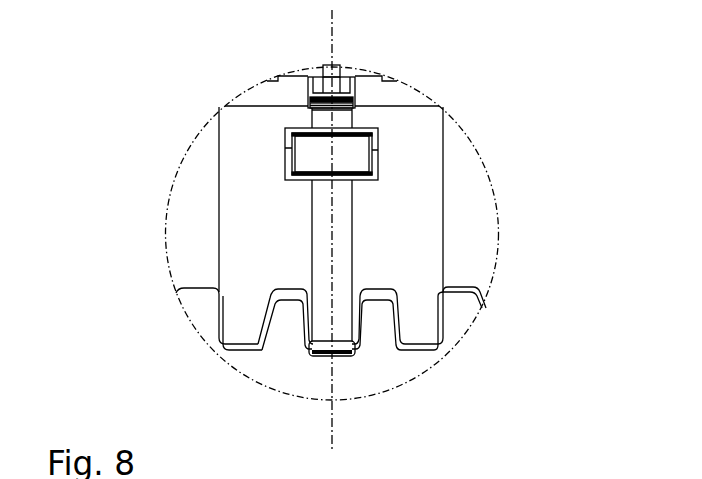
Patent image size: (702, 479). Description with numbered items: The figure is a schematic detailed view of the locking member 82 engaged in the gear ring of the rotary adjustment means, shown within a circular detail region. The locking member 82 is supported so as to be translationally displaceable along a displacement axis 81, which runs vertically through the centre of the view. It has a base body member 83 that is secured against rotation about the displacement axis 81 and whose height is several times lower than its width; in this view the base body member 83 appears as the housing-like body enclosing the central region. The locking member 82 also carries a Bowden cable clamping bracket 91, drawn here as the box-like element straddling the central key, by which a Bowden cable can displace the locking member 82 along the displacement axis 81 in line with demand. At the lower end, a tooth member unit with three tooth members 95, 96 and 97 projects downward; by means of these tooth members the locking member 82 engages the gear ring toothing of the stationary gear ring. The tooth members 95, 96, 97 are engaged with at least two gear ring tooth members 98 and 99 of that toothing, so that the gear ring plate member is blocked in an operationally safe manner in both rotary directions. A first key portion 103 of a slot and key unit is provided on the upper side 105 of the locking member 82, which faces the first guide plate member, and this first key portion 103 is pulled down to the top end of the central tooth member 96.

The displacement axis 81 is at (331, 427).
The locking member 82 is at (452, 79).
The base body member 83 is at (422, 165).
The Bowden cable clamping bracket 91 is at (263, 130).
The tooth member 95 is at (225, 332).
The tooth member 96 is at (358, 333).
The tooth member 97 is at (427, 320).
The gear ring tooth member 98 is at (283, 337).
The gear ring tooth member 99 is at (390, 340).
The first key portion 103 is at (342, 232).
The upper side 105 is at (253, 192).